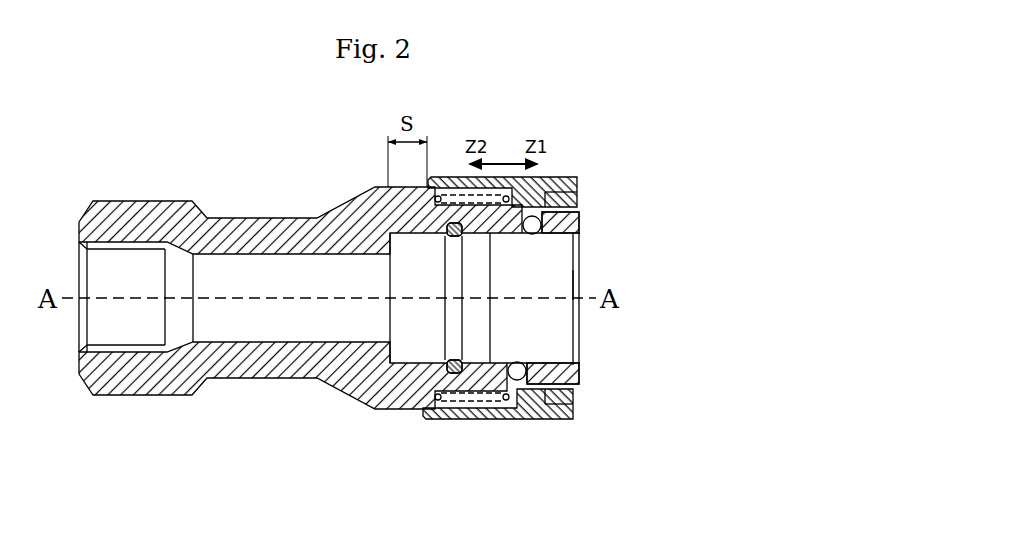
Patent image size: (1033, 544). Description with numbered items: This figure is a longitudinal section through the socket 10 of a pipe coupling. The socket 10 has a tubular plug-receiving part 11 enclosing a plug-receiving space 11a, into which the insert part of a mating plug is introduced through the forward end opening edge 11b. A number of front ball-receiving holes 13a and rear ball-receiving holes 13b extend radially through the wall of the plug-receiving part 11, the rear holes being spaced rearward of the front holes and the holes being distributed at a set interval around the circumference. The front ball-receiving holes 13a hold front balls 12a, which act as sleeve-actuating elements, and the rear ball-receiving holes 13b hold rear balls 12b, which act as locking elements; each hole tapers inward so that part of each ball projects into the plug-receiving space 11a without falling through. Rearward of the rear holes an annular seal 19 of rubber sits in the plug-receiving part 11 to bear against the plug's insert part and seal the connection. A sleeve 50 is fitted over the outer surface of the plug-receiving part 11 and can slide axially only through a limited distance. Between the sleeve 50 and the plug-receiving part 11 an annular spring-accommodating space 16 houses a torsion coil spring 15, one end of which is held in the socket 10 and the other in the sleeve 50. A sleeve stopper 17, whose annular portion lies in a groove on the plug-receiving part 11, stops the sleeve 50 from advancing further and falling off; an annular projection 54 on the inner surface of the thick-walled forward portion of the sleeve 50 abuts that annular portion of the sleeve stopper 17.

The socket 10 is at (268, 221).
The plug-receiving part 11 is at (576, 234).
The plug-receiving space 11a is at (553, 318).
The forward end opening edge 11b is at (579, 283).
The front balls 12a is at (533, 234).
The rear balls 12b is at (516, 372).
The front ball-receiving holes 13a is at (578, 211).
The rear ball-receiving holes 13b is at (578, 381).
The torsion coil spring 15 is at (445, 419).
The spring-accommodating space 16 is at (498, 210).
The sleeve stopper 17 is at (576, 199).
The annular seal 19 is at (457, 278).
The sleeve 50 is at (547, 304).
The annular projection 54 is at (516, 419).